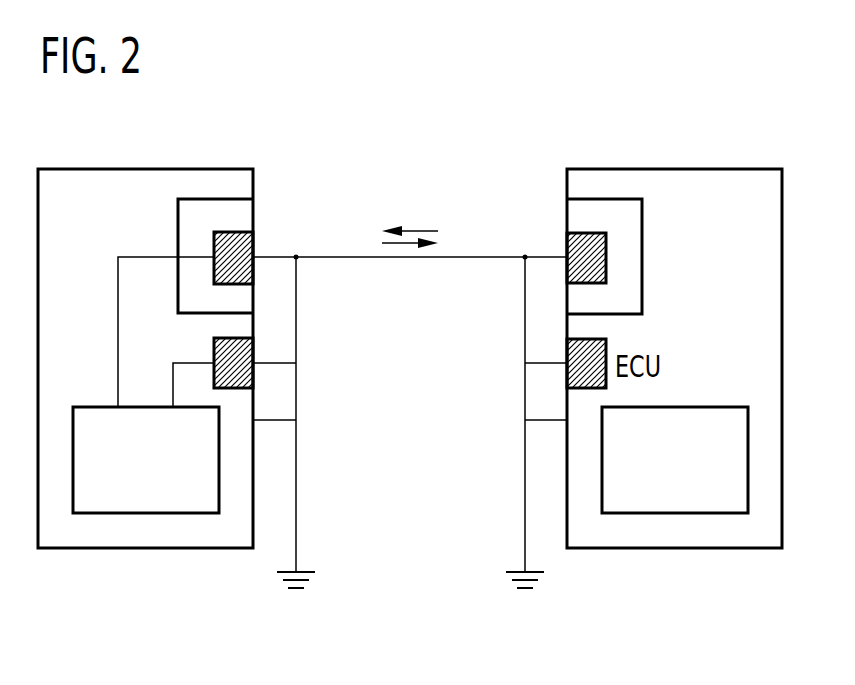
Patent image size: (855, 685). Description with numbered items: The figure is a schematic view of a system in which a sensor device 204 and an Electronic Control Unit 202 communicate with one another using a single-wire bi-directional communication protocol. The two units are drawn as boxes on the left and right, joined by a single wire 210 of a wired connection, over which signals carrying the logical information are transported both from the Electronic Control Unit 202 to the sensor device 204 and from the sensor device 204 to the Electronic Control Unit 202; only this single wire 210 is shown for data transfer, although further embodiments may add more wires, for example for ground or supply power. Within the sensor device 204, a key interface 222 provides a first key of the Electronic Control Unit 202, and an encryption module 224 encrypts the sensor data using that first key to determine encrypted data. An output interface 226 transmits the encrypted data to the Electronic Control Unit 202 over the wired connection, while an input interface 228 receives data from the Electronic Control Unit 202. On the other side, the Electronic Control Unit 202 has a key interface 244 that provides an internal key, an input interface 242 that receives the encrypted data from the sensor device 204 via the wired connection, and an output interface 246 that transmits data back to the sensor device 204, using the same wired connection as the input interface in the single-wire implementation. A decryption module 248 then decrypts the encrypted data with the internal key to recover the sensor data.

The Electronic Control Unit 202 is at (672, 169).
The sensor device 204 is at (143, 169).
The single wire 210 is at (412, 257).
The key interface 222 is at (178, 223).
The encryption module 224 is at (148, 513).
The output interface 226 is at (253, 378).
The input interface 228 is at (253, 246).
The input interface 242 is at (567, 246).
The key interface 244 is at (642, 258).
The output interface 246 is at (567, 378).
The decryption module 248 is at (680, 513).